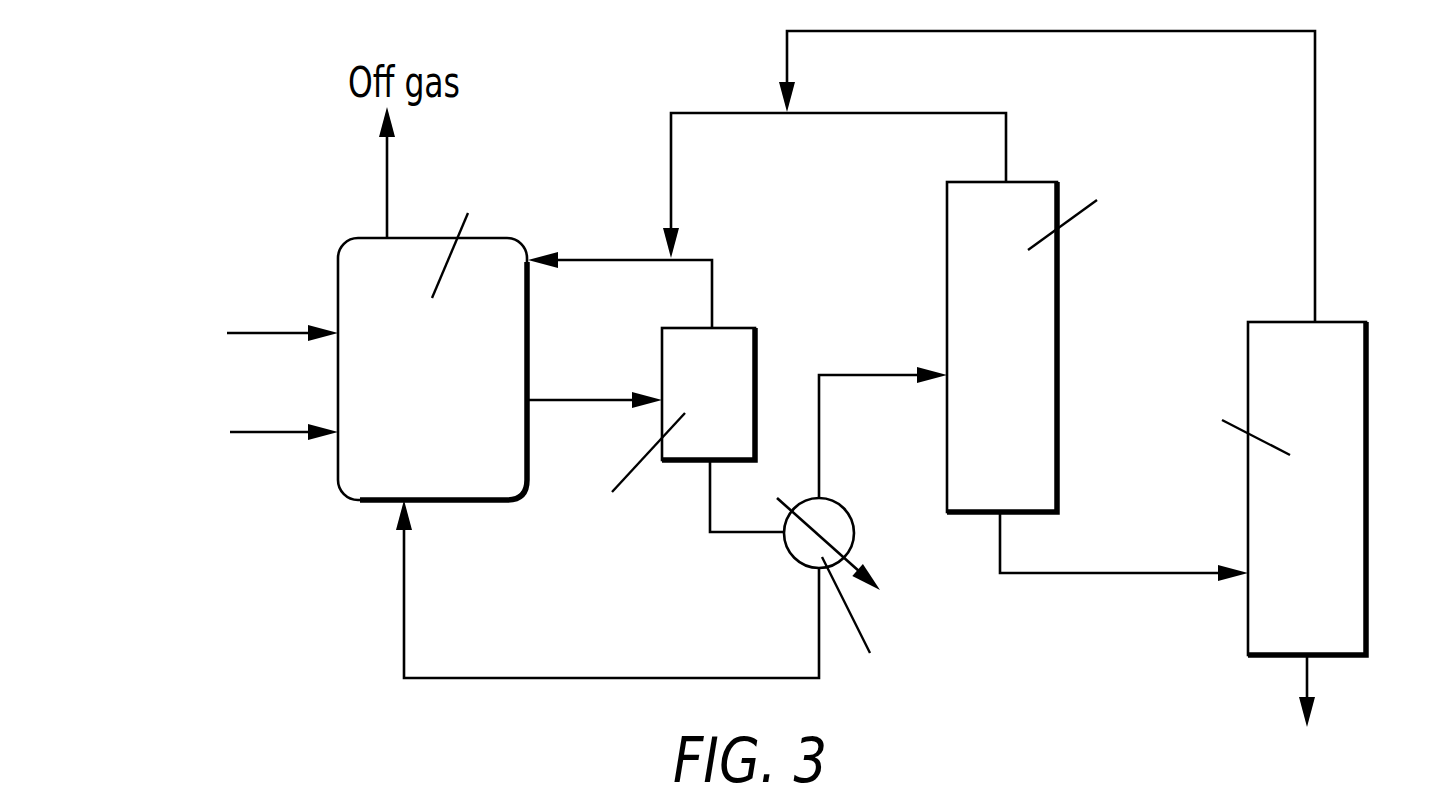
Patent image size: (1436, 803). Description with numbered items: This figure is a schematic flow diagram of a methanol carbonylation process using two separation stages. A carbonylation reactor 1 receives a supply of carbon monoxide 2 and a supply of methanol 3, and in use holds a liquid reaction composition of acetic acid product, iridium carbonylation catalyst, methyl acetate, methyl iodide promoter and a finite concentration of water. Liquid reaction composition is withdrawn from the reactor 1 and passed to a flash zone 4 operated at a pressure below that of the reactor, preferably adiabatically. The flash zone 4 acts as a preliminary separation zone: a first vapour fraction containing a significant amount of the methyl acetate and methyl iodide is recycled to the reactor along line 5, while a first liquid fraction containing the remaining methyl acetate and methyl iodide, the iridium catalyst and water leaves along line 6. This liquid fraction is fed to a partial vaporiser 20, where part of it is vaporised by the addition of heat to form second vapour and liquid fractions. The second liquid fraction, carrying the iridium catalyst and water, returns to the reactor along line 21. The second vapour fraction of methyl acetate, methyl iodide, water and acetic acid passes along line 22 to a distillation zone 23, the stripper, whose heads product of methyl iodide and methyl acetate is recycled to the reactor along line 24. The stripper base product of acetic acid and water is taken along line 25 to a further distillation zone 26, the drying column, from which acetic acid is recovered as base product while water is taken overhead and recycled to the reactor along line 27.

The carbonylation reactor 1 is at (392, 468).
The supply of carbon monoxide 2 is at (265, 337).
The supply of methanol 3 is at (287, 432).
The flash zone 4 is at (757, 380).
The line 5 is at (605, 258).
The line 6 is at (748, 540).
The partial vaporiser 20 is at (850, 512).
The line 21 is at (610, 680).
The line 22 is at (878, 374).
The distillation zone 23 is at (1062, 305).
The line 24 is at (845, 116).
The line 25 is at (1128, 573).
The distillation zone 26 is at (1367, 545).
The line 27 is at (1318, 172).